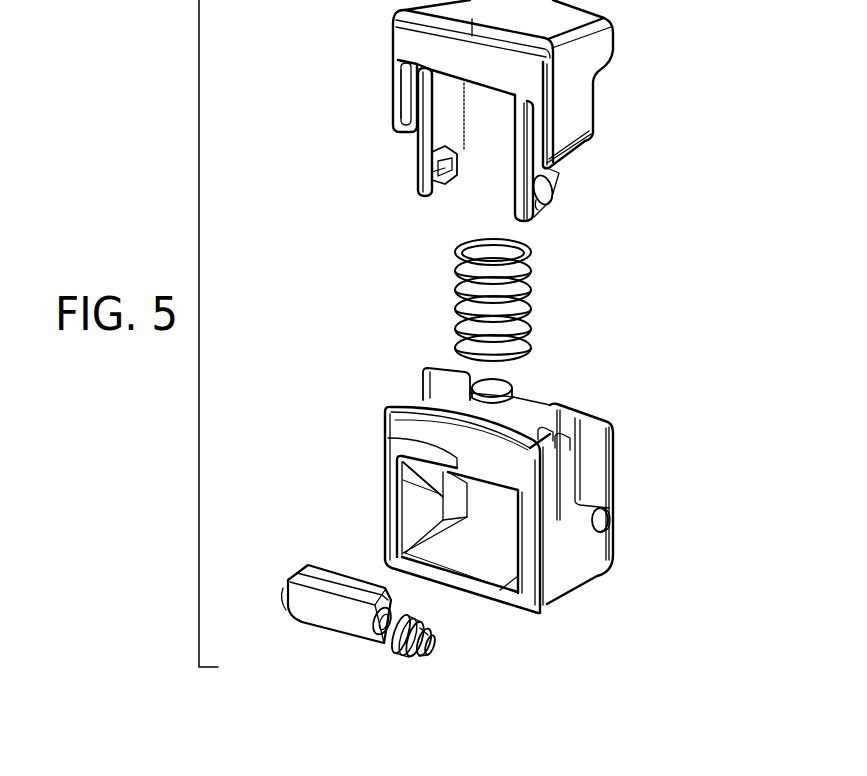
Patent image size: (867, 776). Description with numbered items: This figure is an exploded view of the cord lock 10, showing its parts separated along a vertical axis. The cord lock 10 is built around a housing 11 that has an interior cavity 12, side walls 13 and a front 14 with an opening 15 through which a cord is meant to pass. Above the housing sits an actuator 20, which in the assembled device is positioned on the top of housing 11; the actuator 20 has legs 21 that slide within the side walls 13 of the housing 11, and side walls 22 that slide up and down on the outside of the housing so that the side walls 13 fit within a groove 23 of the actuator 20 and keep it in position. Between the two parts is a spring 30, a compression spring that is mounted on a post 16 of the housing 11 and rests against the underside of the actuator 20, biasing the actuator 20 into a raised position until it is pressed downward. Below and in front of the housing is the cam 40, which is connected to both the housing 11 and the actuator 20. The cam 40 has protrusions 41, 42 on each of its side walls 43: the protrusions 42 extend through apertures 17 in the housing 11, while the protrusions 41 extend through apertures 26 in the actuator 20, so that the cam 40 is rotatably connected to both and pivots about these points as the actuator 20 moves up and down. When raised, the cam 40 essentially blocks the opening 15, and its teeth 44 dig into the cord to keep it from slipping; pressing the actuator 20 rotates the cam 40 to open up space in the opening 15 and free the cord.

The cord lock 10 is at (682, 298).
The housing 11 is at (570, 547).
The interior cavity 12 is at (490, 543).
The side walls 13 is at (570, 572).
The front 14 is at (410, 427).
The opening 15 is at (418, 513).
The post 16 is at (514, 398).
The apertures 17 is at (611, 521).
The actuator 20 is at (623, 82).
The legs 21 is at (425, 150).
The side walls 22 is at (393, 65).
The groove 23 is at (410, 100).
The apertures 26 is at (540, 200).
The spring 30 is at (527, 305).
The cam 40 is at (336, 610).
The protrusions 41 is at (384, 627).
The protrusions 42 is at (421, 644).
The side walls 43 is at (402, 614).
The teeth 44 is at (303, 562).